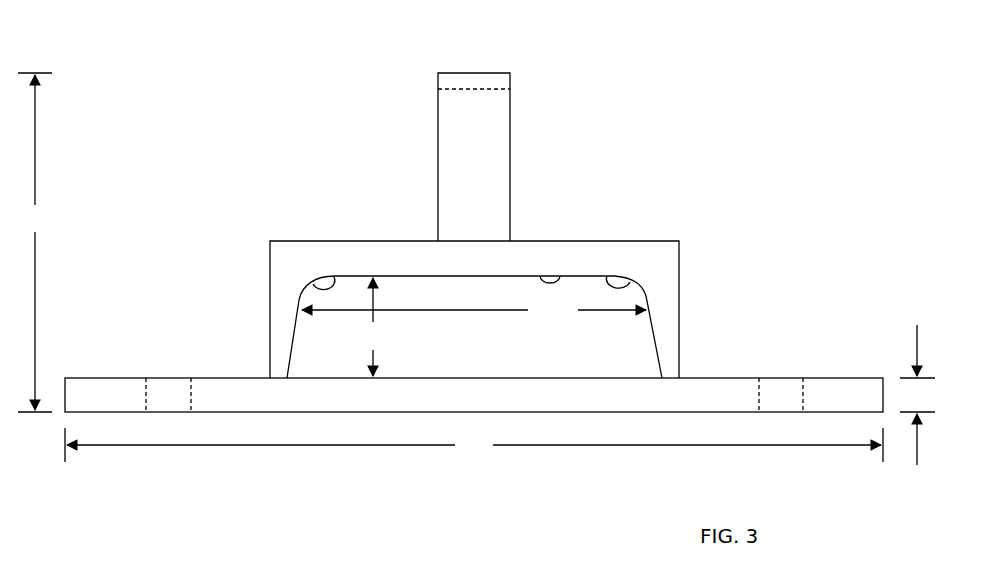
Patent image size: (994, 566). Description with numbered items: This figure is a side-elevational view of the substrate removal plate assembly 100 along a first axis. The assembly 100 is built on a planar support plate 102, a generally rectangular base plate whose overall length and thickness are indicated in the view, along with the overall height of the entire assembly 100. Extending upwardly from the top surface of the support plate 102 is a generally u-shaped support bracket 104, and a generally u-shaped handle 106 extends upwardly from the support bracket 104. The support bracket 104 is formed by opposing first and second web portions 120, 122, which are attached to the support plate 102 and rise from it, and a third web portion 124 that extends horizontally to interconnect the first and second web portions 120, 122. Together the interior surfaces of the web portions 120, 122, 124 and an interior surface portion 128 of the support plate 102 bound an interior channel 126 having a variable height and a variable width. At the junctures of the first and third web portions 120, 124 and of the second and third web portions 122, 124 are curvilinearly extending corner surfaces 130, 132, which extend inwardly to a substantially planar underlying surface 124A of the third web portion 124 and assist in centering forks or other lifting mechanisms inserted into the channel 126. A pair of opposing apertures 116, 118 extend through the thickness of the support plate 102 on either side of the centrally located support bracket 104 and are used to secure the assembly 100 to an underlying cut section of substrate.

The substrate removal plate assembly 100 is at (158, 40).
The support plate 102 is at (851, 377).
The support bracket 104 is at (683, 212).
The handle 106 is at (490, 140).
The aperture 116 is at (150, 395).
The aperture 118 is at (803, 395).
The first web portion 120 is at (280, 301).
The second web portion 122 is at (682, 308).
The third web portion 124 is at (380, 258).
The underlying surface 124A is at (560, 275).
The interior channel 126 is at (598, 354).
The interior surface portion 128 is at (317, 378).
The curvilinearly extending corner surface 130 is at (335, 275).
The curvilinearly extending corner surface 132 is at (612, 277).